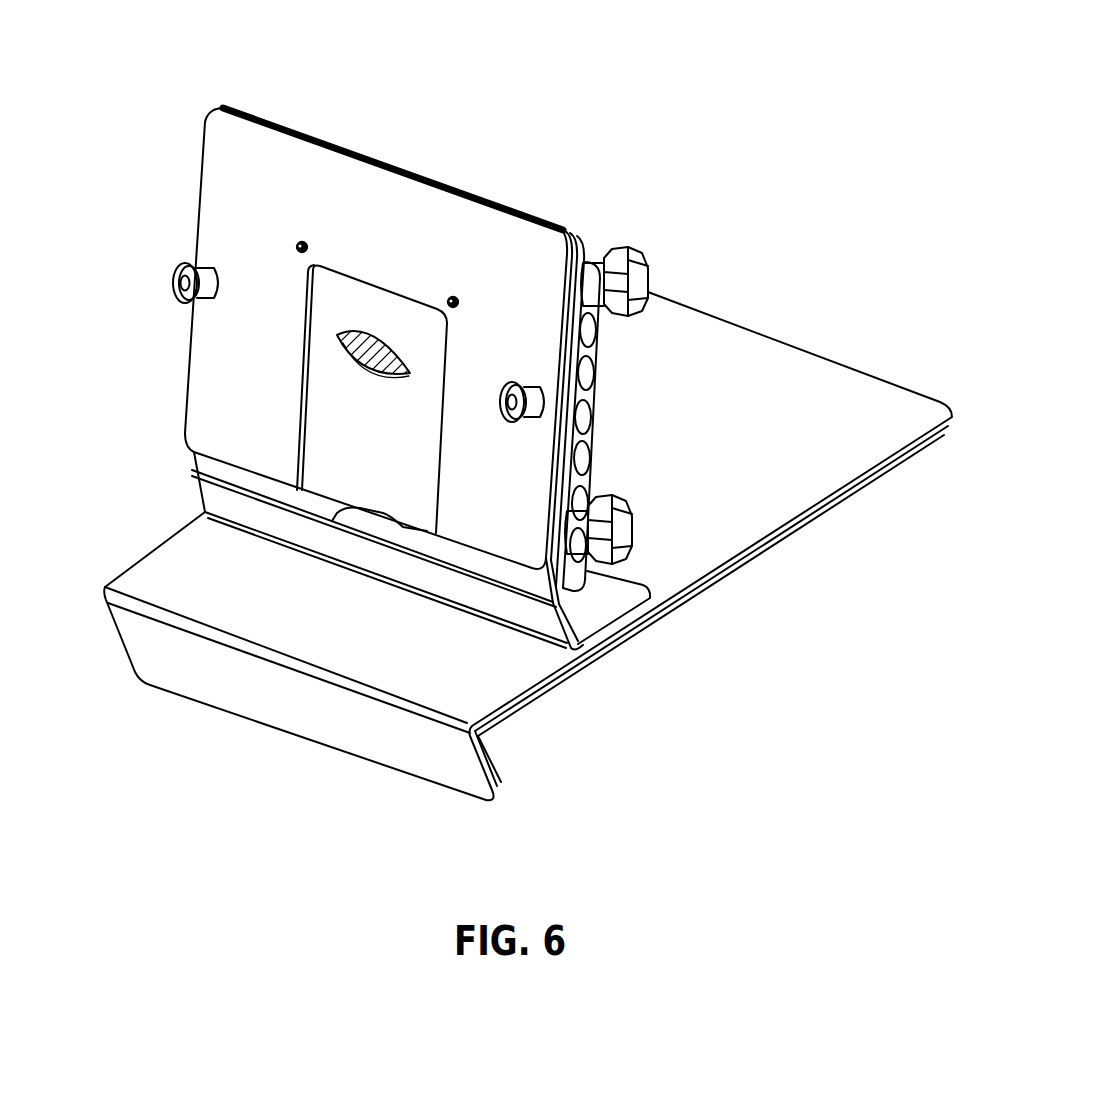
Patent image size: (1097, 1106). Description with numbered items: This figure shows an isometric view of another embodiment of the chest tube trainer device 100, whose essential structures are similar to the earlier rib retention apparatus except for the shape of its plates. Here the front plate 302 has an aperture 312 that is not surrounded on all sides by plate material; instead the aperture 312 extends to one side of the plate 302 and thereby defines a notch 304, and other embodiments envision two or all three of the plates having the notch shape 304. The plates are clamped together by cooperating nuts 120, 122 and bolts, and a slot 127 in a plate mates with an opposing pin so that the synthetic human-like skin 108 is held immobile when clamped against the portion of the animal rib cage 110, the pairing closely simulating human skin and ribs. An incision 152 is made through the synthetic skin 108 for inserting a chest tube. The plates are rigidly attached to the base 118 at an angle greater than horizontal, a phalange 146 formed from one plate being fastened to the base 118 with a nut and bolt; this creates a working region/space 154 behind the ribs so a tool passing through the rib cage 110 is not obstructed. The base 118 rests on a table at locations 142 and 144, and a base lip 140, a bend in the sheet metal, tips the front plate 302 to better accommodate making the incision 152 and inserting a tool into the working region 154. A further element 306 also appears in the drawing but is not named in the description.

The chest tube trainer device 100 is at (404, 45).
The synthetic human-like skin 108 is at (337, 360).
The portion of the animal rib cage 110 is at (585, 377).
The base 118 is at (813, 403).
The nut 120 is at (172, 283).
The nut 122 is at (649, 274).
The slot 127 is at (296, 247).
The base lip 140 is at (285, 692).
The location 142 is at (508, 800).
The location 144 is at (952, 433).
The phalange 146 is at (609, 603).
The incision 152 is at (400, 352).
The working region/space 154 is at (735, 366).
The front plate 302 is at (183, 400).
The notch 304 is at (583, 237).
The rail 306 is at (597, 435).
The aperture 312 is at (357, 314).